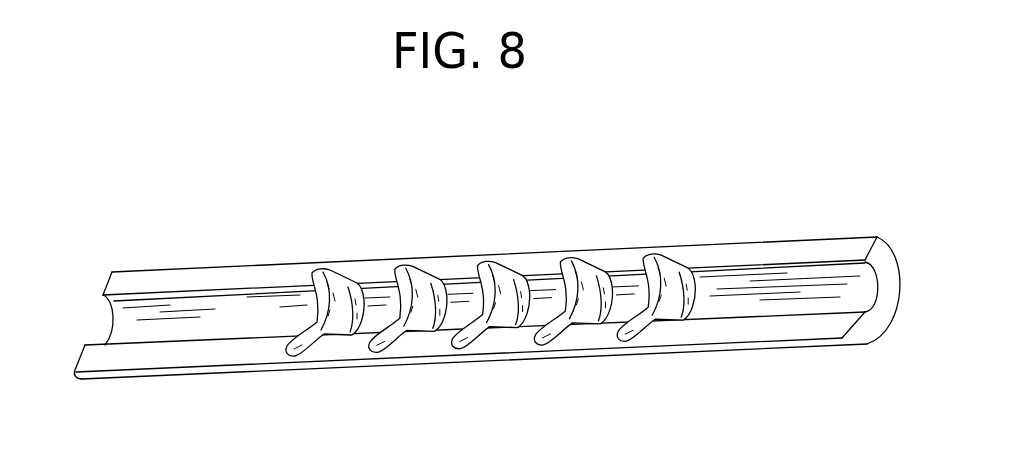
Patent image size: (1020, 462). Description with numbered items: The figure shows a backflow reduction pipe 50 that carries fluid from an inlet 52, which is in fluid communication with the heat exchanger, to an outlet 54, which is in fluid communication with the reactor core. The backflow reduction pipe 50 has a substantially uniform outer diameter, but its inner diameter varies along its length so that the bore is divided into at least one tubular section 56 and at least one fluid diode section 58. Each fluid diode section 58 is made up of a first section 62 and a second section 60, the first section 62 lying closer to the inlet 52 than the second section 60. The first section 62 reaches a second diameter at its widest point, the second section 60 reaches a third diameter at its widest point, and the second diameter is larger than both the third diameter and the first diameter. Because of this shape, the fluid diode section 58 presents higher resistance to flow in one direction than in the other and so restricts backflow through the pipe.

The backflow reduction pipe 50 is at (202, 268).
The inlet 52 is at (104, 330).
The outlet 54 is at (860, 292).
The tubular section 56 is at (194, 335).
The fluid diode section 58 is at (617, 274).
The second section 60 is at (648, 288).
The first section 62 is at (583, 263).